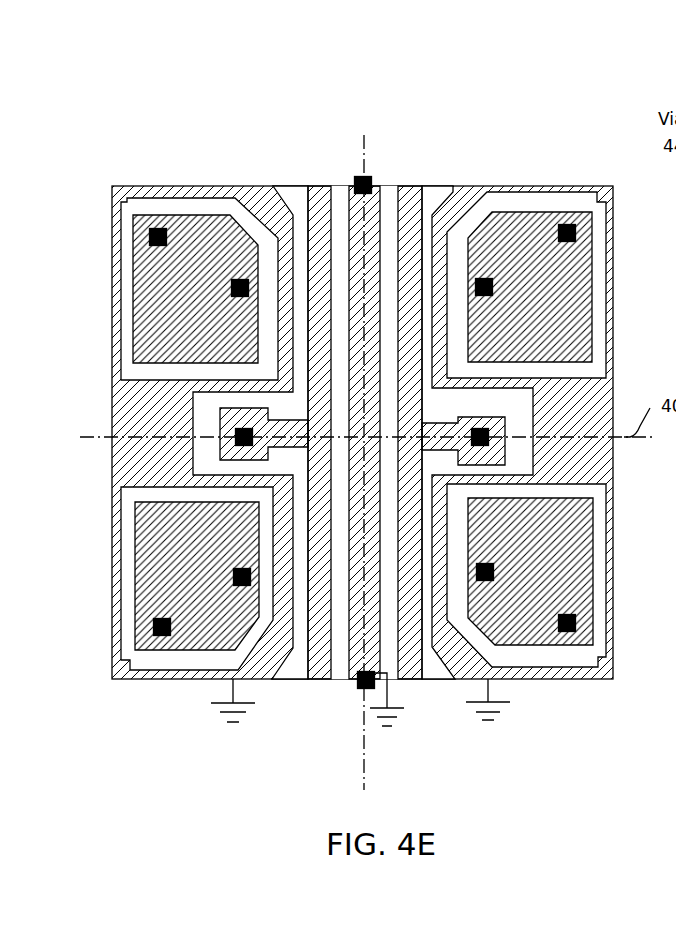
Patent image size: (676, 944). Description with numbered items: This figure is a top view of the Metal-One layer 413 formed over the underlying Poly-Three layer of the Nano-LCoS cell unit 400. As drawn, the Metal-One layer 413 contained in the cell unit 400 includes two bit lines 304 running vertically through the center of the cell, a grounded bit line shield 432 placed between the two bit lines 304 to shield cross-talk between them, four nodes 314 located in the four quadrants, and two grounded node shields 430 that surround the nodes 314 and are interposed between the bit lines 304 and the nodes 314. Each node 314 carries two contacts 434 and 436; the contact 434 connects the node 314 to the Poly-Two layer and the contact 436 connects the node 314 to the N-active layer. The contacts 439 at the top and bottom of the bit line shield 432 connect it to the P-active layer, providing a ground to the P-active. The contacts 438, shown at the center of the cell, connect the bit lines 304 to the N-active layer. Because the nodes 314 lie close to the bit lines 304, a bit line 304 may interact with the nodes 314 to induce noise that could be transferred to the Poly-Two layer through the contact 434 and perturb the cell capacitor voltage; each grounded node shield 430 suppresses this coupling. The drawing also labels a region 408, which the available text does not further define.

The Nano-LCoS cell unit 400 is at (248, 184).
The node shield 430 is at (504, 151).
The node 314 is at (150, 342).
The bit line 304 is at (452, 767).
The bit line shield 432 is at (372, 212).
The contact 434 is at (628, 639).
The contact 436 is at (628, 592).
The contact 438 is at (235, 431).
The contact 439 is at (355, 177).
The substrate region 408 is at (365, 742).
The Metal-1 layer 413 is at (184, 59).